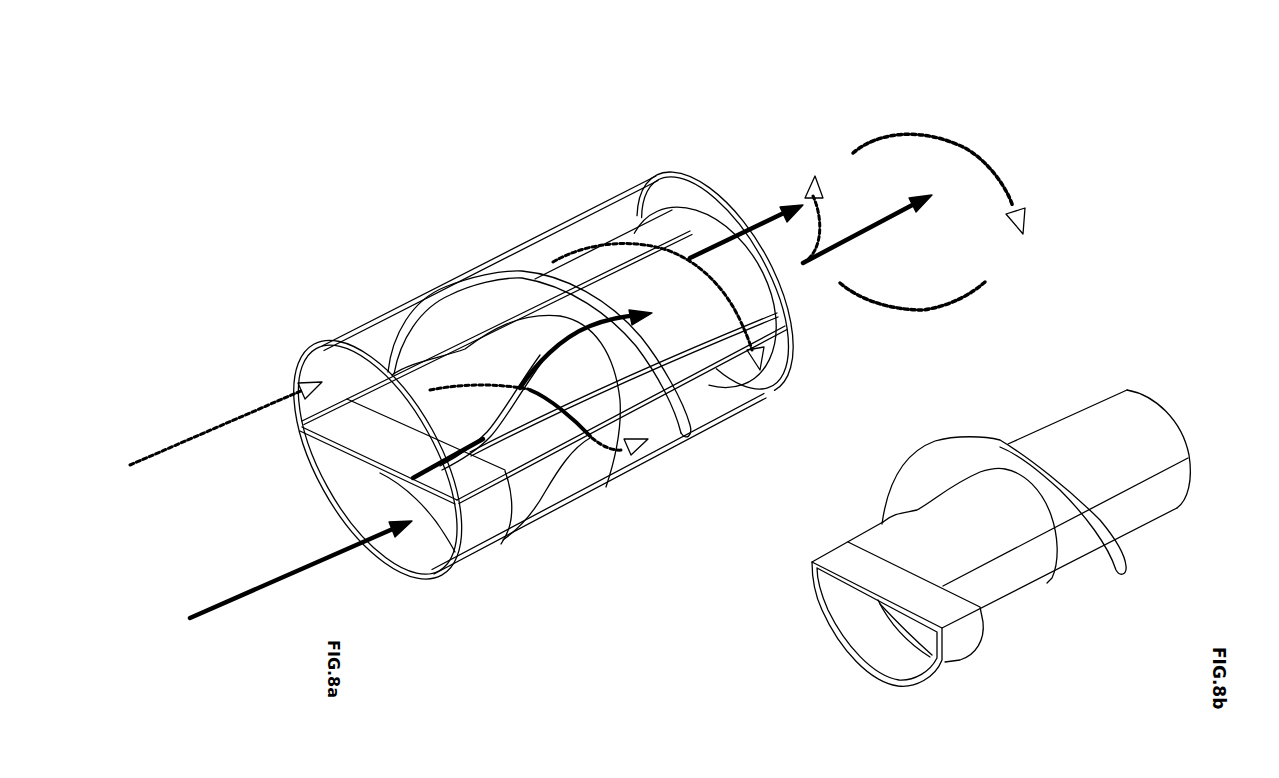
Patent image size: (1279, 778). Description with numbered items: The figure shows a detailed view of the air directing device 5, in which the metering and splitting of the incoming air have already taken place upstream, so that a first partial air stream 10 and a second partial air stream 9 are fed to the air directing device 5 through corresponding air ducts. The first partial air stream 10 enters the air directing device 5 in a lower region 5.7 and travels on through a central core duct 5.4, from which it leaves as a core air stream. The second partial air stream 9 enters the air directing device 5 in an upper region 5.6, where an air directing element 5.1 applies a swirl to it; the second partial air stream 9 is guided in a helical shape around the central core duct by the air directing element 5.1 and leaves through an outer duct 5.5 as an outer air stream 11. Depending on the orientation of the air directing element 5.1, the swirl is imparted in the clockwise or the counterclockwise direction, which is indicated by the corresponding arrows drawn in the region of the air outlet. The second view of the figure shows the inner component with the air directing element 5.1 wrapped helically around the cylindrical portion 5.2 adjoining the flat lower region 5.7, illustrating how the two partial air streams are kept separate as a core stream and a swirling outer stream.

In FIG. 8B, the air directing device 5 is at (1039, 388).
In FIG. 8A, the air directing element 5.1 is at (513, 275).
In FIG. 8B, the air directing element 5.1 is at (1122, 578).
In FIG. 8B, the cylindrical outlet section 5.2 is at (1180, 422).
In FIG. 8A, the core duct 5.4 is at (772, 279).
In FIG. 8B, the core duct 5.4 is at (1162, 395).
In FIG. 8A, the outer duct 5.5 is at (737, 186).
In FIG. 8A, the upper region 5.6 is at (337, 417).
In FIG. 8A, the lower region 5.7 is at (350, 502).
In FIG. 8B, the lower region 5.7 is at (885, 638).
In FIG. 8A, the second partial air stream 9 is at (203, 437).
In FIG. 8A, the first partial air stream 10 is at (531, 418).
In FIG. 8A, the outer air stream 11 is at (987, 161).